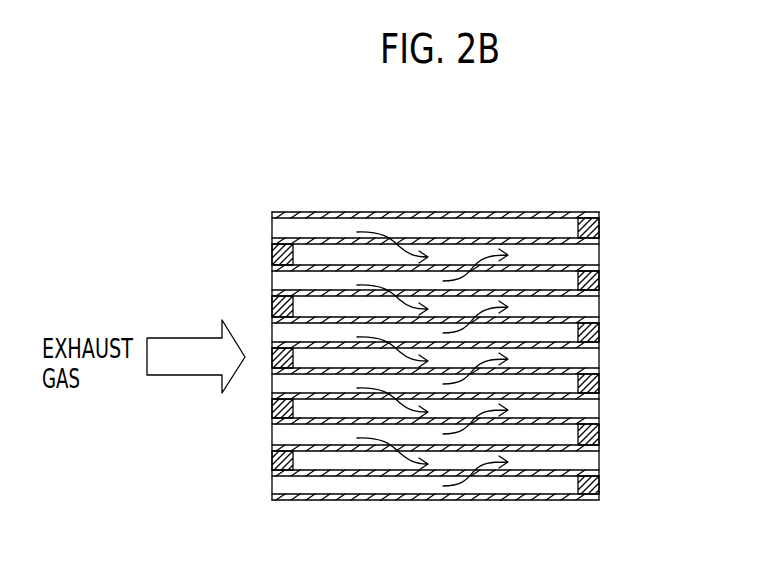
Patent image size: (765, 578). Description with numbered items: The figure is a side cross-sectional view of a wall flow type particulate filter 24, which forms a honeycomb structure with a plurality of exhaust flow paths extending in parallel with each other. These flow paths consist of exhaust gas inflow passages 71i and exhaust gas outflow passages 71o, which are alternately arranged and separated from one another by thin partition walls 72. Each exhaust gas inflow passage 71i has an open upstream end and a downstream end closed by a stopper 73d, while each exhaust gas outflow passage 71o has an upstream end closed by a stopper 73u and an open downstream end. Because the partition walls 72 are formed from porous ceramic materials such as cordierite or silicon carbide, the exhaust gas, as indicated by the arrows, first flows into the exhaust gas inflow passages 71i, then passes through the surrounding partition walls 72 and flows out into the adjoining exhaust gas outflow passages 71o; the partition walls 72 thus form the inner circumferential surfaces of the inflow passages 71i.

The particulate filter 24 is at (571, 169).
The exhaust gas outflow passages 71o is at (342, 254).
The exhaust gas inflow passages 71i is at (355, 480).
The partition walls 72 is at (462, 240).
The stoppers 73u is at (272, 306).
The stoppers 73d is at (599, 280).